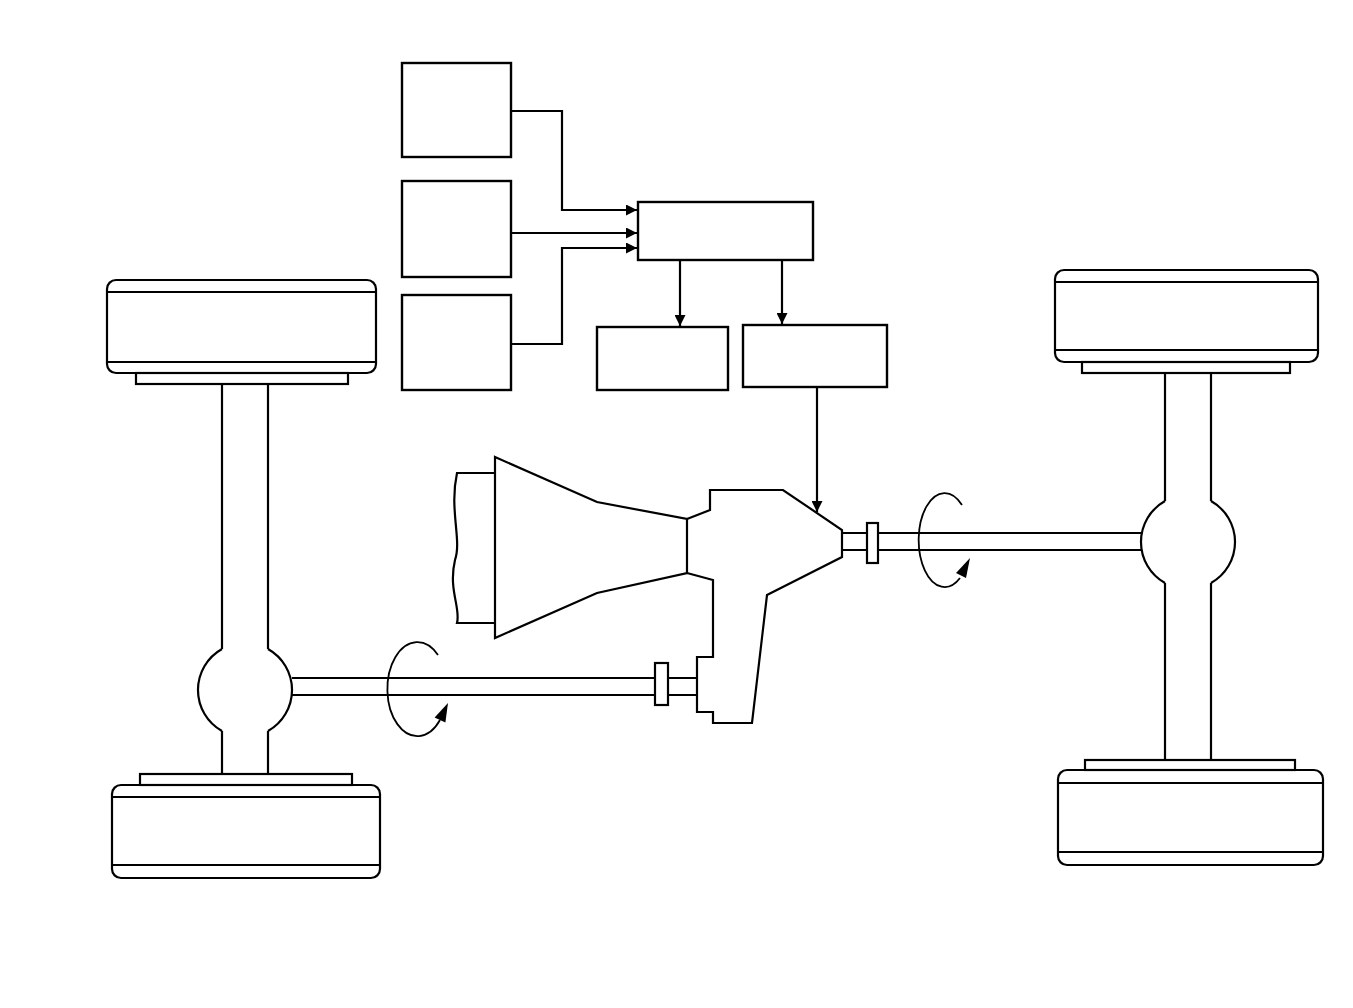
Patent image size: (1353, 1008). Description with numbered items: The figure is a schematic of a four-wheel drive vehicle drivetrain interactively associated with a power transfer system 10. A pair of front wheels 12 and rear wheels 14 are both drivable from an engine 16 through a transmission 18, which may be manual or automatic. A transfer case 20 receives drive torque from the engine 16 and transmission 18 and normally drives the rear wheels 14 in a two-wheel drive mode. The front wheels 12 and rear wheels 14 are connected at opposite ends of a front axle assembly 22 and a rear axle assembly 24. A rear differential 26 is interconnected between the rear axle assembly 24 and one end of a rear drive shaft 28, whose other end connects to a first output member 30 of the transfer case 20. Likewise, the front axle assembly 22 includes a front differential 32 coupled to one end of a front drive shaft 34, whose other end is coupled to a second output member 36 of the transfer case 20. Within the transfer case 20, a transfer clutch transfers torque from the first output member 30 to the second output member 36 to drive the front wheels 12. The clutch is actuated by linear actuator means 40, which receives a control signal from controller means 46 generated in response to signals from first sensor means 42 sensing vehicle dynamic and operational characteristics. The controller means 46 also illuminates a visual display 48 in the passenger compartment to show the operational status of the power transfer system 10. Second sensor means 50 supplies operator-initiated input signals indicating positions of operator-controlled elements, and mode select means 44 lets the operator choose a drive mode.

The power transfer system 10 is at (882, 241).
The front wheels 12 is at (180, 327).
The rear wheels 14 is at (1155, 292).
The engine 16 is at (491, 529).
The transmission 18 is at (590, 554).
The transfer case 20 is at (776, 554).
The front axle assembly 22 is at (244, 516).
The rear axle assembly 24 is at (1182, 420).
The rear differential 26 is at (1212, 540).
The rear drive shaft 28 is at (1045, 555).
The first output member 30 is at (853, 530).
The front differential 32 is at (225, 690).
The front drive shaft 34 is at (548, 687).
The second output member 36 is at (681, 692).
The linear actuator means 40 is at (887, 355).
The first sensor means 42 is at (402, 94).
The mode select means 44 is at (450, 392).
The controller means 46 is at (723, 202).
The visual display 48 is at (650, 392).
The second sensor means 50 is at (402, 225).